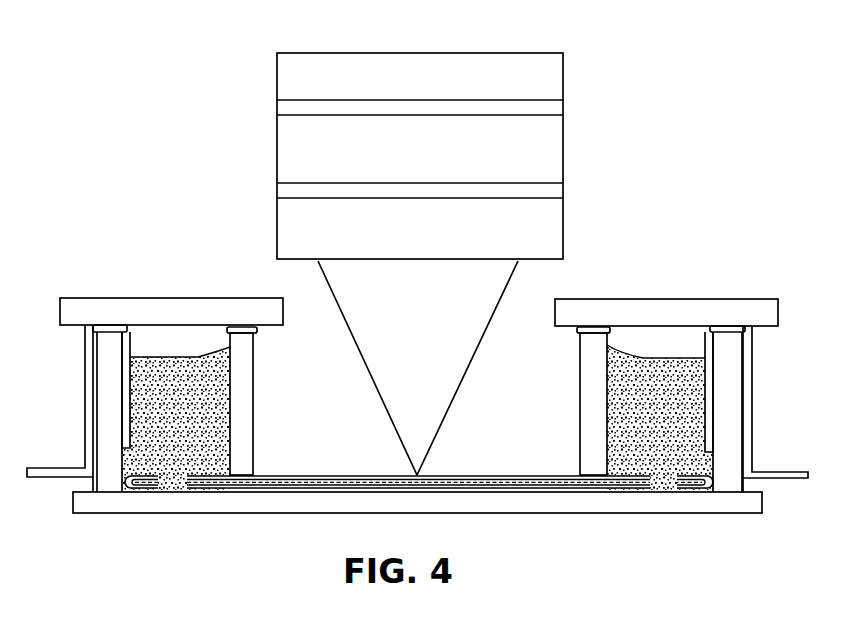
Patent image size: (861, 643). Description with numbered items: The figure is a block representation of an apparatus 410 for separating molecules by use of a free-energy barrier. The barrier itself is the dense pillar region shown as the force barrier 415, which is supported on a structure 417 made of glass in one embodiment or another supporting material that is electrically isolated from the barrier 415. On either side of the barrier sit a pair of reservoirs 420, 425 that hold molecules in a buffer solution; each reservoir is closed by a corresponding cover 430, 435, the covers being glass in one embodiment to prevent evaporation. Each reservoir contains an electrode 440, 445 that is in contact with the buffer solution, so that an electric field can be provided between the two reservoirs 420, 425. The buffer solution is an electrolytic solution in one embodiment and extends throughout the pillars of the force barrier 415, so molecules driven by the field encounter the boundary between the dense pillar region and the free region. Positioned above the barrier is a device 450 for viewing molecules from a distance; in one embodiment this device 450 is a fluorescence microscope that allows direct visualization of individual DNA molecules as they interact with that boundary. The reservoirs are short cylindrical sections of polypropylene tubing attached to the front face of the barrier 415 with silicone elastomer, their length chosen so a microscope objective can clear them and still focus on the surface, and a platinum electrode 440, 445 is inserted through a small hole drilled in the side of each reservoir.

The apparatus 410 is at (695, 70).
The free-energy barrier 415 is at (482, 476).
The supporting structure 417 is at (589, 513).
The reservoir 420 is at (107, 355).
The reservoir 425 is at (732, 357).
The cover 430 is at (172, 298).
The cover 435 is at (665, 300).
The electrode 440 is at (85, 396).
The electrode 445 is at (754, 398).
The viewing device 450 is at (420, 53).